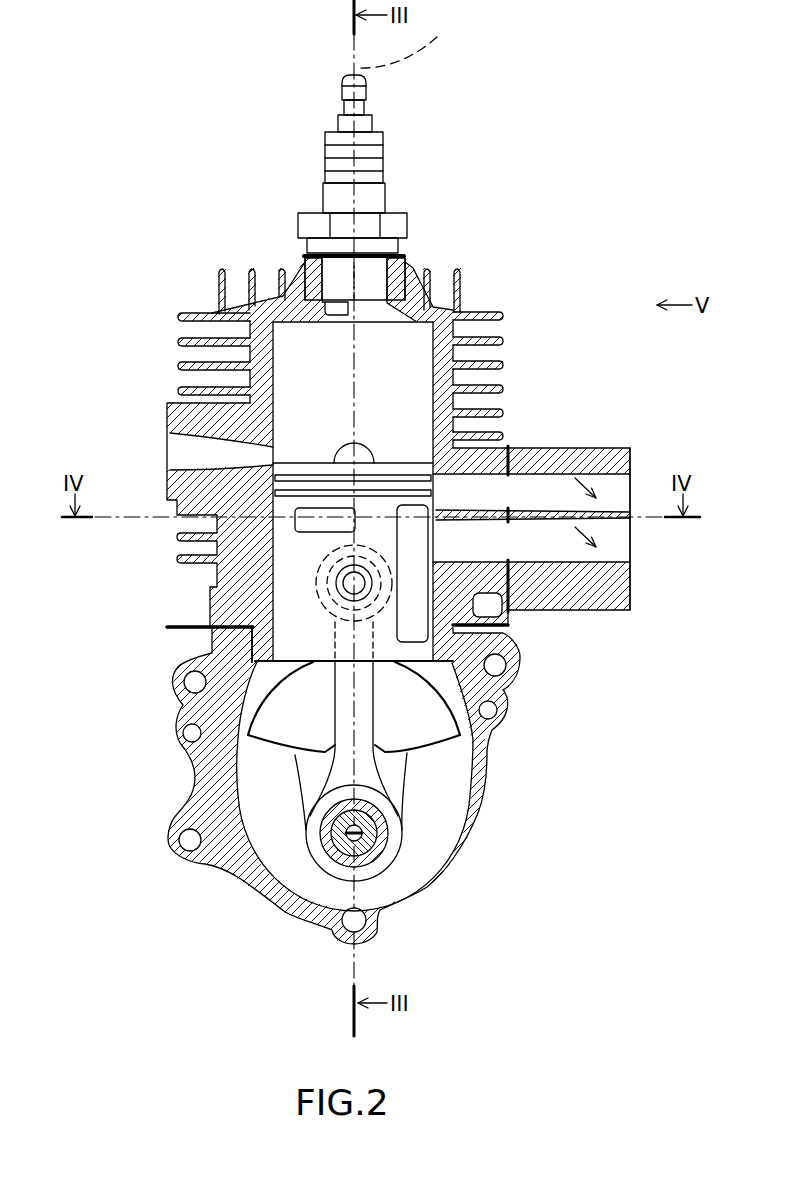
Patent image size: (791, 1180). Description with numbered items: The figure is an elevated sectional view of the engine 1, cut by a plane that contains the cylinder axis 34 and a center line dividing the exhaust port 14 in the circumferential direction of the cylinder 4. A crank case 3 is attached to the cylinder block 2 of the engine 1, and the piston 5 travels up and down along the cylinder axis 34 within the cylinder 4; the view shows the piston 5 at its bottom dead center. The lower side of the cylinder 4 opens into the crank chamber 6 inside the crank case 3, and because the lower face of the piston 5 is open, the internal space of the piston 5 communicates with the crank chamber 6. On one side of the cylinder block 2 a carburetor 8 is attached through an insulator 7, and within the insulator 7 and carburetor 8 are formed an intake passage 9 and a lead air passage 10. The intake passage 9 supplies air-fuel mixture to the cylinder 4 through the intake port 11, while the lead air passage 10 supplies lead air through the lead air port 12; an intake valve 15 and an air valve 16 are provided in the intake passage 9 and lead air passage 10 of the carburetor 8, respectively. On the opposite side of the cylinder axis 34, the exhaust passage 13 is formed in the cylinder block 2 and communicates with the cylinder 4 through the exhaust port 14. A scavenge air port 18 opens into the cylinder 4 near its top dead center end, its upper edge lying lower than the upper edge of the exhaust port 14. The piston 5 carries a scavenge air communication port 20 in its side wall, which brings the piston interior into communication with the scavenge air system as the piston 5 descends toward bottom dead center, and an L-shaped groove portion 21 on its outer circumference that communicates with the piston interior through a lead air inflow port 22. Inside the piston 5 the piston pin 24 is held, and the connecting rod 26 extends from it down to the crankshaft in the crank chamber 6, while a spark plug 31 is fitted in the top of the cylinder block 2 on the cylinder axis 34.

The engine 1 is at (510, 126).
The cylinder block 2 is at (404, 290).
The crank case 3 is at (445, 855).
The cylinder 4 is at (308, 395).
The piston 5 is at (210, 628).
The crank chamber 6 is at (455, 780).
The insulator 7 is at (470, 570).
The carburetor 8 is at (600, 600).
The intake passage 9 is at (618, 551).
The lead air passage 10 is at (606, 486).
The intake port 11 is at (507, 542).
The lead air port 12 is at (495, 471).
The exhaust passage 13 is at (175, 450).
The exhaust port 14 is at (170, 431).
The intake valve 15 is at (588, 548).
The air valve 16 is at (604, 484).
The scavenge air port 18 is at (376, 448).
The scavenge air communication port 20 is at (307, 527).
The groove portion 21 is at (418, 626).
The lead air inflow port 22 is at (428, 485).
The piston pin 24 is at (270, 680).
The connecting rod 26 is at (343, 772).
The spark plug 31 is at (382, 312).
The cylinder axis 34 is at (408, 42).